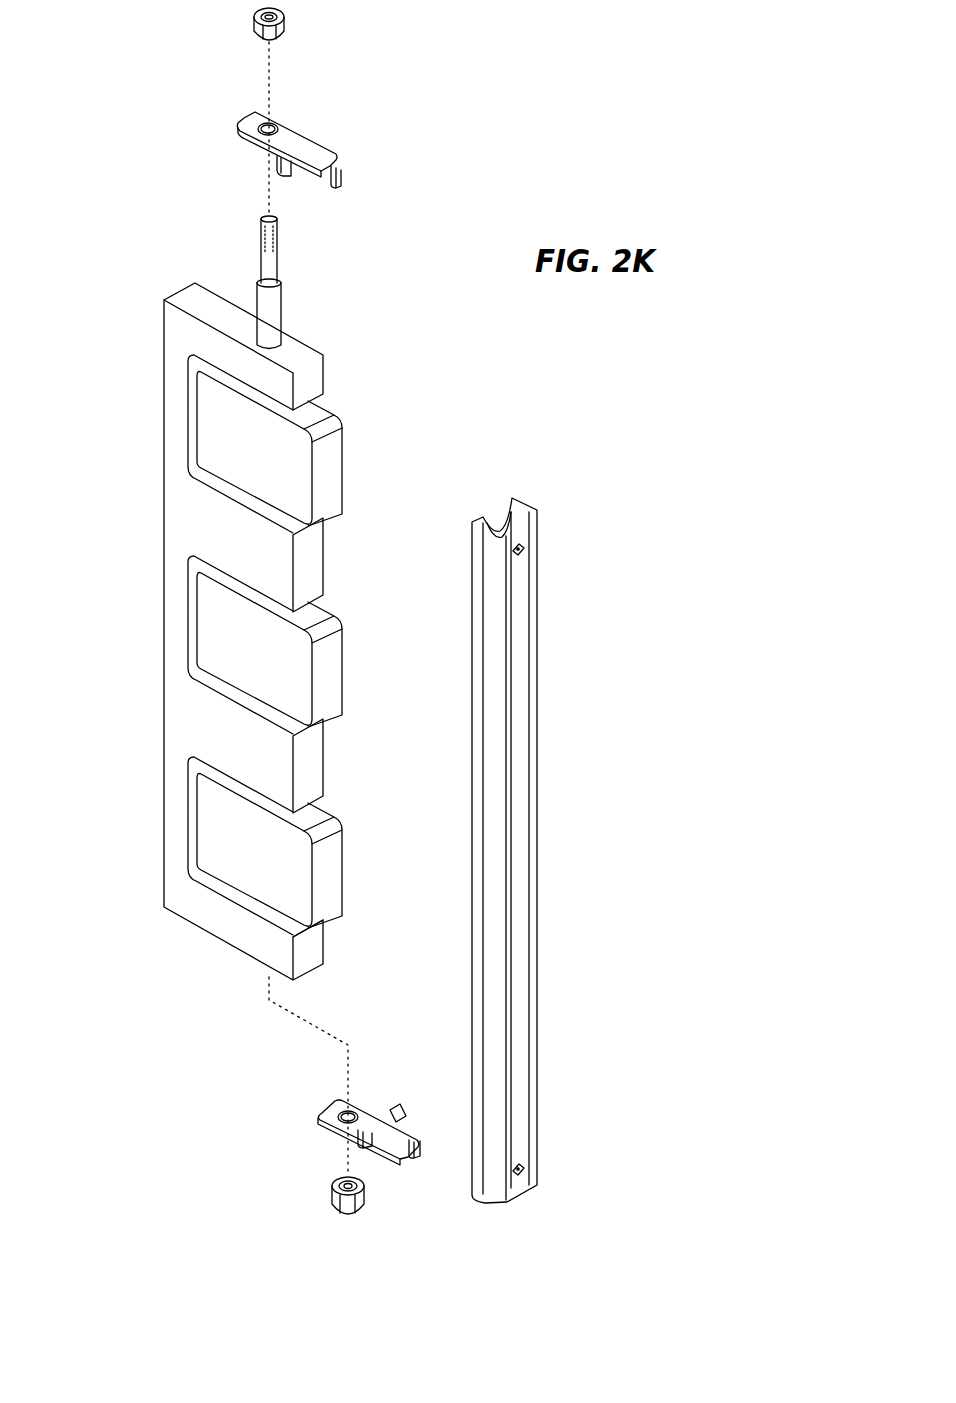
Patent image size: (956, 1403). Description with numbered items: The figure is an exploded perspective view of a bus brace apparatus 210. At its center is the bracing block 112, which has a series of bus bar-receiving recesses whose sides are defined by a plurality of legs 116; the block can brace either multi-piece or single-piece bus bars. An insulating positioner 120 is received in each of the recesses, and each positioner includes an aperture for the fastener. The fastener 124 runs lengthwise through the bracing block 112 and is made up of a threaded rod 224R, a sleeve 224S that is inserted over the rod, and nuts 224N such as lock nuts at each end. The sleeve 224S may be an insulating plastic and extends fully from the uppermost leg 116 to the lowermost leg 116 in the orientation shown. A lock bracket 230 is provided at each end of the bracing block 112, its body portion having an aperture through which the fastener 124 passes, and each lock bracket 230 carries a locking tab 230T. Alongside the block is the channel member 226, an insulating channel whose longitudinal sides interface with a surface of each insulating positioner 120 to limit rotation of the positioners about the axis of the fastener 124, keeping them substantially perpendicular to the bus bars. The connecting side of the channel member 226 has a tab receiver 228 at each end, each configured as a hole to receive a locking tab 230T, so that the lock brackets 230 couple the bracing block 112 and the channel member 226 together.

The bus brace apparatus 210 is at (508, 70).
The bracing block 112 is at (152, 358).
The legs 116 is at (311, 378).
The insulating positioner 120 is at (273, 459).
The fastener 124 is at (238, 223).
The threaded rod 224R is at (279, 252).
The sleeve 224S is at (283, 309).
The nuts 224N is at (285, 21).
The lock bracket 230 is at (238, 106).
The locking tab 230T is at (342, 175).
The channel member 226 is at (530, 478).
The tab receiver 228 is at (523, 548).